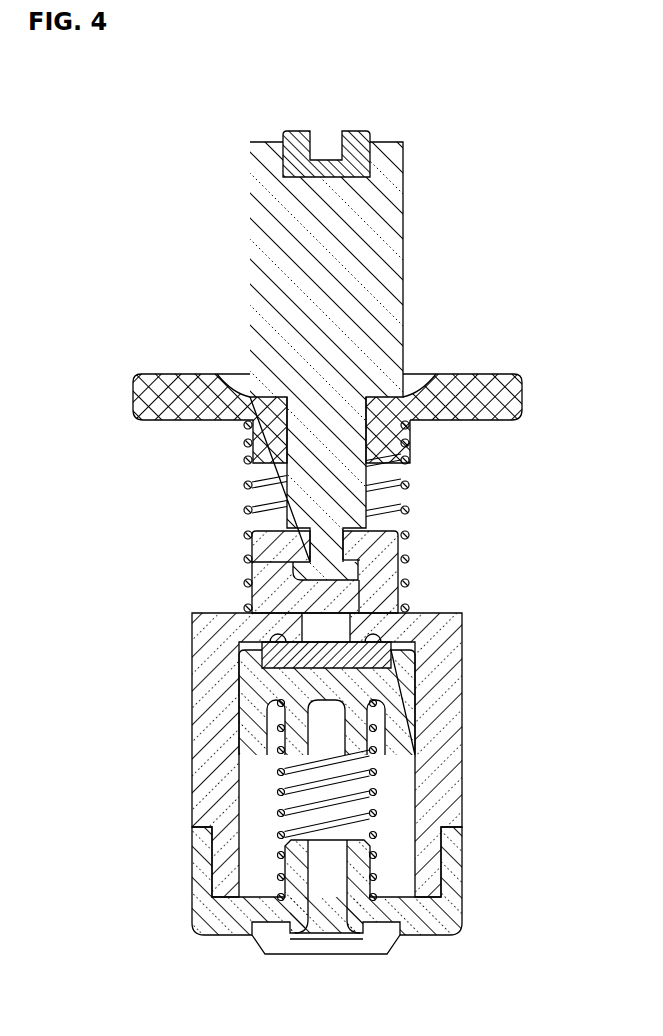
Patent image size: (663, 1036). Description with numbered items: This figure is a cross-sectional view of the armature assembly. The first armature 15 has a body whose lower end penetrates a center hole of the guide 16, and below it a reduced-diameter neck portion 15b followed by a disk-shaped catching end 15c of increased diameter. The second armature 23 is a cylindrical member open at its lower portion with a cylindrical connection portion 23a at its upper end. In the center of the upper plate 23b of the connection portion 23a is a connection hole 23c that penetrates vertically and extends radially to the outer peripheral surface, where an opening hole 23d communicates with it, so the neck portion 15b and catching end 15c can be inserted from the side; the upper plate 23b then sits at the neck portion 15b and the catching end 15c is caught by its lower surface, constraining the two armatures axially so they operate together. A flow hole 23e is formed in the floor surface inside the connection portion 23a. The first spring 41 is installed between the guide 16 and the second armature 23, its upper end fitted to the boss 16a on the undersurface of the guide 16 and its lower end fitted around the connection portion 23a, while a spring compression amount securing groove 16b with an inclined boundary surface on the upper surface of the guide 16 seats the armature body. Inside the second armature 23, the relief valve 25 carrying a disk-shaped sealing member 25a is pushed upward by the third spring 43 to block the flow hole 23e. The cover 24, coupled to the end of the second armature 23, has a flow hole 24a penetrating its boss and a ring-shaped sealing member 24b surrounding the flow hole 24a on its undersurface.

The first armature 15 is at (353, 367).
The neck portion 15b is at (282, 567).
The catching end 15c is at (352, 142).
The guide 16 is at (345, 390).
The boss 16a is at (410, 432).
The spring compression amount securing groove 16b is at (422, 376).
The first spring 41 is at (245, 484).
The second armature 23 is at (324, 713).
The connection portion 23a is at (398, 576).
The upper plate 23b is at (275, 541).
The connection hole 23c is at (395, 543).
The opening hole 23d is at (275, 592).
The flow hole 23e is at (300, 627).
The relief valve 25 is at (375, 698).
The sealing member 25a is at (412, 660).
The third spring 43 is at (280, 792).
The cover 24 is at (347, 909).
The flow hole 24a is at (326, 928).
The sealing member 24b is at (385, 940).